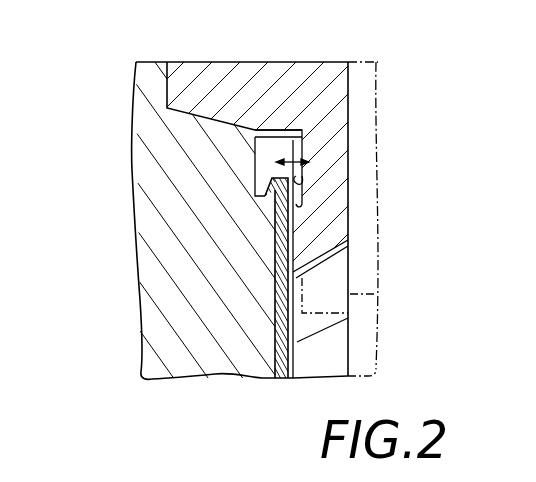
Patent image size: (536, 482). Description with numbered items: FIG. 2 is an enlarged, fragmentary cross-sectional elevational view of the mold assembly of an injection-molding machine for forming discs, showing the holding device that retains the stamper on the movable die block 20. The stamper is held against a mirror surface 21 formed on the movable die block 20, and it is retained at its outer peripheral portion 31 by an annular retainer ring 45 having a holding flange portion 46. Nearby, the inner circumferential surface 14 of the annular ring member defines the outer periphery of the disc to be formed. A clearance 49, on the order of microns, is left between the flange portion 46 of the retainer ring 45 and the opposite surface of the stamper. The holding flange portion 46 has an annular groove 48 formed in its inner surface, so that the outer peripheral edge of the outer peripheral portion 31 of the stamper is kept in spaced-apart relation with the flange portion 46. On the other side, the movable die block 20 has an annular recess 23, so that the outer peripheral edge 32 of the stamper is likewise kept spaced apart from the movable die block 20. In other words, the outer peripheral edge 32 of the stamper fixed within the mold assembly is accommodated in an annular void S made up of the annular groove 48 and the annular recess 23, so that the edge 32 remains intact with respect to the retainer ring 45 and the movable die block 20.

The inner circumferential surface 14 is at (333, 314).
The movable die block 20 is at (152, 297).
The mirror surface 21 is at (276, 315).
The annular recess 23 is at (271, 165).
The outer peripheral portion 31 is at (282, 222).
The outer peripheral edge 32 is at (264, 164).
The annular retainer ring 45 is at (356, 106).
The holding flange portion 46 is at (312, 242).
The annular groove 48 is at (302, 182).
The clearance 49 is at (288, 153).
The annular void S is at (276, 161).